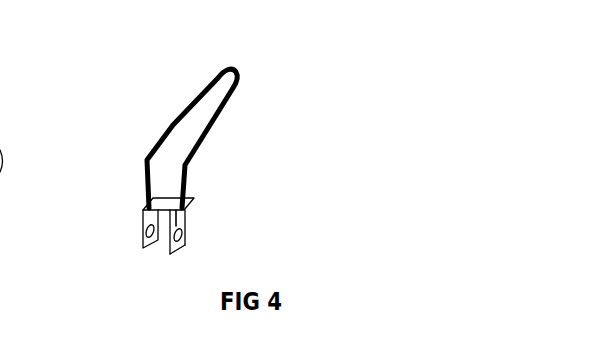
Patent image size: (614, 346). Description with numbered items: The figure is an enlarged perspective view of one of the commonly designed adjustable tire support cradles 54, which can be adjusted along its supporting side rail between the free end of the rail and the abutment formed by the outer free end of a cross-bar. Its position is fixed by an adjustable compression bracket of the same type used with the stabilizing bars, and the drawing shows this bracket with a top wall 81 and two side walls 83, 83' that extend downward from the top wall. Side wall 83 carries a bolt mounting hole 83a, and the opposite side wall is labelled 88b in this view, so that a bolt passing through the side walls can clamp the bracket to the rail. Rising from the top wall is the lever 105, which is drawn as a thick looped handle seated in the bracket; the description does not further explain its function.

The lever 105 is at (183, 200).
The top wall 81 is at (146, 209).
The side wall 83 is at (129, 252).
The bolt mounting hole 83a is at (144, 233).
The right tab 88b is at (184, 231).
The side wall 83' is at (212, 258).
The adjustable cradle 54 is at (183, 209).